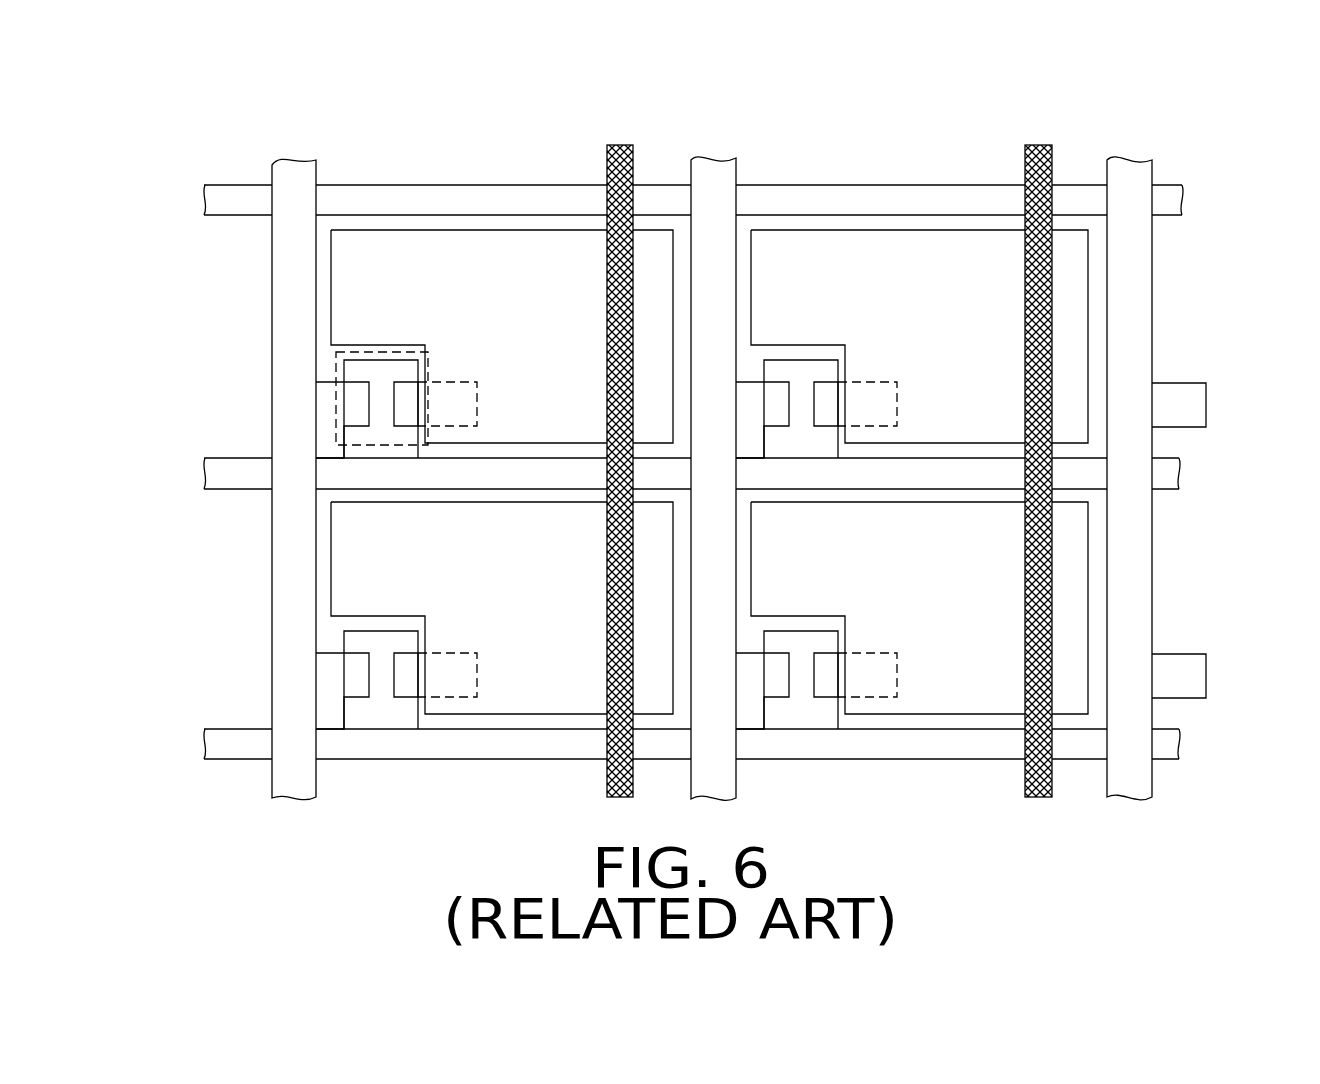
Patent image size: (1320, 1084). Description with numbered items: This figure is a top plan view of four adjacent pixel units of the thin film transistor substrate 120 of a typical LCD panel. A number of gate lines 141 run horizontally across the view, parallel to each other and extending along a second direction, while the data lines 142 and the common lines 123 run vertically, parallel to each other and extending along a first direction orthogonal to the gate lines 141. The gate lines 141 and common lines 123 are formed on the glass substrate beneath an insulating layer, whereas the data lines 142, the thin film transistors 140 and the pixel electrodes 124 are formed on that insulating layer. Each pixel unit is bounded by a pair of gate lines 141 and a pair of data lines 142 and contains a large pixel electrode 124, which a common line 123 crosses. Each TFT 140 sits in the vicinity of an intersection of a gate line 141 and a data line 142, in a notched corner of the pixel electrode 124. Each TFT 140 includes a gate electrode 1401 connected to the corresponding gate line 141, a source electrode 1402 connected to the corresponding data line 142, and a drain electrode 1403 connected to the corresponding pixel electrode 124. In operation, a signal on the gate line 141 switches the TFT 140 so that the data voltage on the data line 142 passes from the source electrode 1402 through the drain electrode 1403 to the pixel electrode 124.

The thin film transistor substrate 120 is at (665, 120).
The common line 123 is at (610, 150).
The pixel electrode 124 is at (475, 268).
The thin film transistor 140 is at (335, 367).
The gate electrode 1401 is at (372, 372).
The source electrode 1402 is at (347, 408).
The drain electrode 1403 is at (408, 405).
The gate line 141 is at (885, 200).
The data line 142 is at (292, 178).